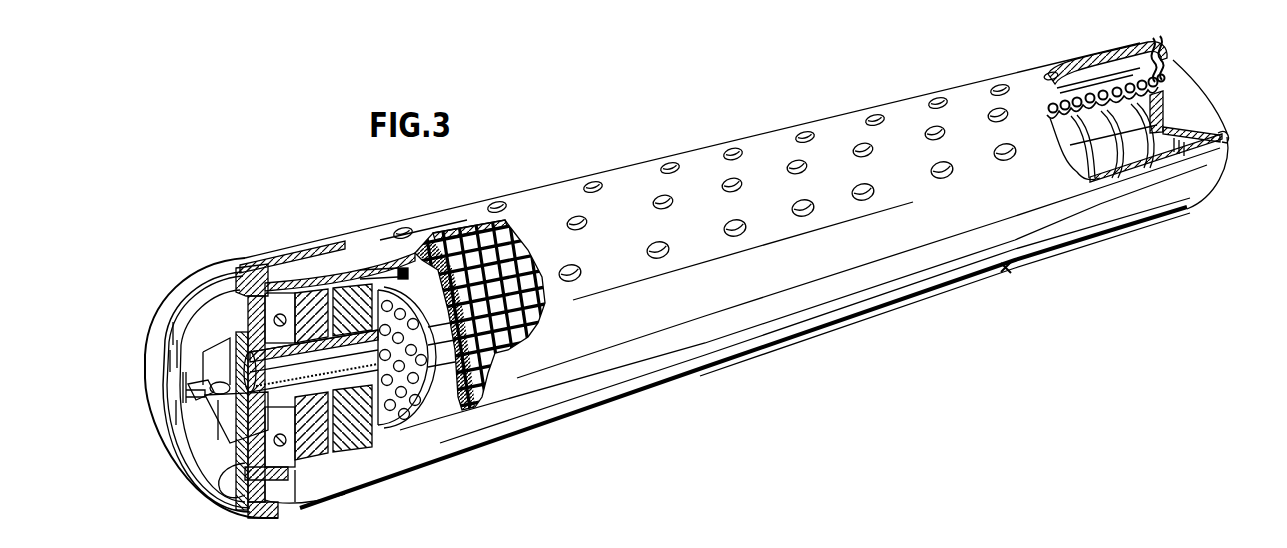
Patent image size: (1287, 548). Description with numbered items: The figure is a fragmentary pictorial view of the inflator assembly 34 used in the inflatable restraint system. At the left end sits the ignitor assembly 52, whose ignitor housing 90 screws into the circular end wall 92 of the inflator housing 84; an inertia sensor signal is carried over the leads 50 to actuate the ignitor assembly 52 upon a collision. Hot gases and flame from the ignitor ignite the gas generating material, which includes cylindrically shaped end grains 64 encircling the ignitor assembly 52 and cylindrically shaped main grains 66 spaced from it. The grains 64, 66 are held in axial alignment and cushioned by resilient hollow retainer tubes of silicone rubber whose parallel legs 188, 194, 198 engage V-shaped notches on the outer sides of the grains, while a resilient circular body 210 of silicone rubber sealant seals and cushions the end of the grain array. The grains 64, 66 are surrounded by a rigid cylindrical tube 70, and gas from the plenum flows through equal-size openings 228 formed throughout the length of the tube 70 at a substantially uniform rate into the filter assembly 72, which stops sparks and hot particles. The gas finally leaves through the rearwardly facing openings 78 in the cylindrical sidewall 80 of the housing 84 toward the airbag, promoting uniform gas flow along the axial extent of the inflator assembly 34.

The inflator assembly 34 is at (692, 132).
The leads 50 is at (212, 400).
The ignitor assembly 52 is at (225, 462).
The end grains 64 is at (310, 298).
The main grains 66 is at (442, 370).
The rigid cylindrical tube 70 is at (1163, 84).
The filter assembly 72 is at (467, 230).
The rearwardly facing openings 78 is at (740, 222).
The cylindrical sidewall 80 is at (1008, 268).
The inflator housing 84 is at (1076, 53).
The ignitor housing 90 is at (225, 423).
The circular end wall 92 is at (240, 497).
The leg of retainer tube 188 is at (395, 268).
The leg of retainer tube 194 is at (505, 360).
The leg of retainer tube 198 is at (458, 367).
The resilient circular body 210 is at (283, 477).
The openings in tube 228 is at (1164, 56).